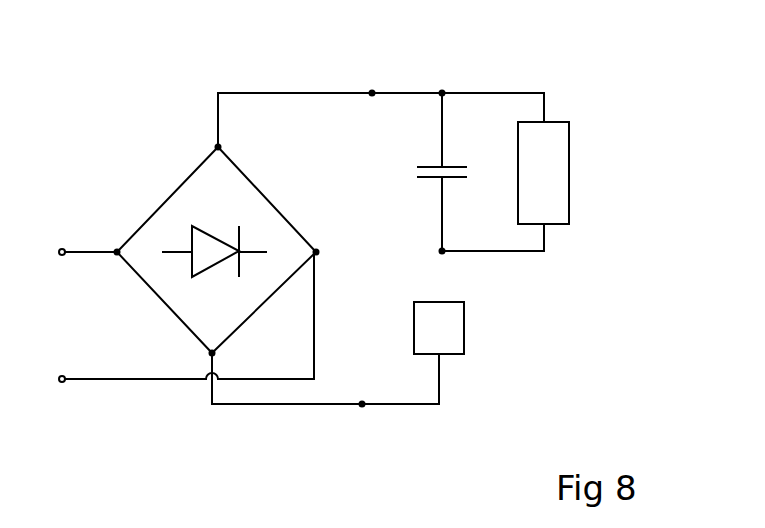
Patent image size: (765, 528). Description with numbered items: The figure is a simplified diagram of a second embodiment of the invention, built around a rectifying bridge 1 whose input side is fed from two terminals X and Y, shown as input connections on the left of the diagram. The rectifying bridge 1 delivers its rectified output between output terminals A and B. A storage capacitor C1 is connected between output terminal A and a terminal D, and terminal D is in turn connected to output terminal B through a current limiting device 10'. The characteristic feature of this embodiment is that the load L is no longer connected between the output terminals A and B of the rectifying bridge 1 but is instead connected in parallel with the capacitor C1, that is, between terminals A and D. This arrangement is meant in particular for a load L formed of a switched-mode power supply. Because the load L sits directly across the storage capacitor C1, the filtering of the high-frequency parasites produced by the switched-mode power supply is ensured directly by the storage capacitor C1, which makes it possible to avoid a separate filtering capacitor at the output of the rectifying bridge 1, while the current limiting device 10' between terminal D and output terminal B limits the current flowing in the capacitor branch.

The rectifying bridge 1 is at (148, 183).
The capacitor C1 is at (425, 172).
The load L is at (569, 162).
The current limiting device 10' is at (478, 328).
The output terminal A is at (371, 74).
The output terminal B is at (354, 428).
The terminal D is at (412, 253).
The input terminal X is at (62, 228).
The input terminal Y is at (61, 360).